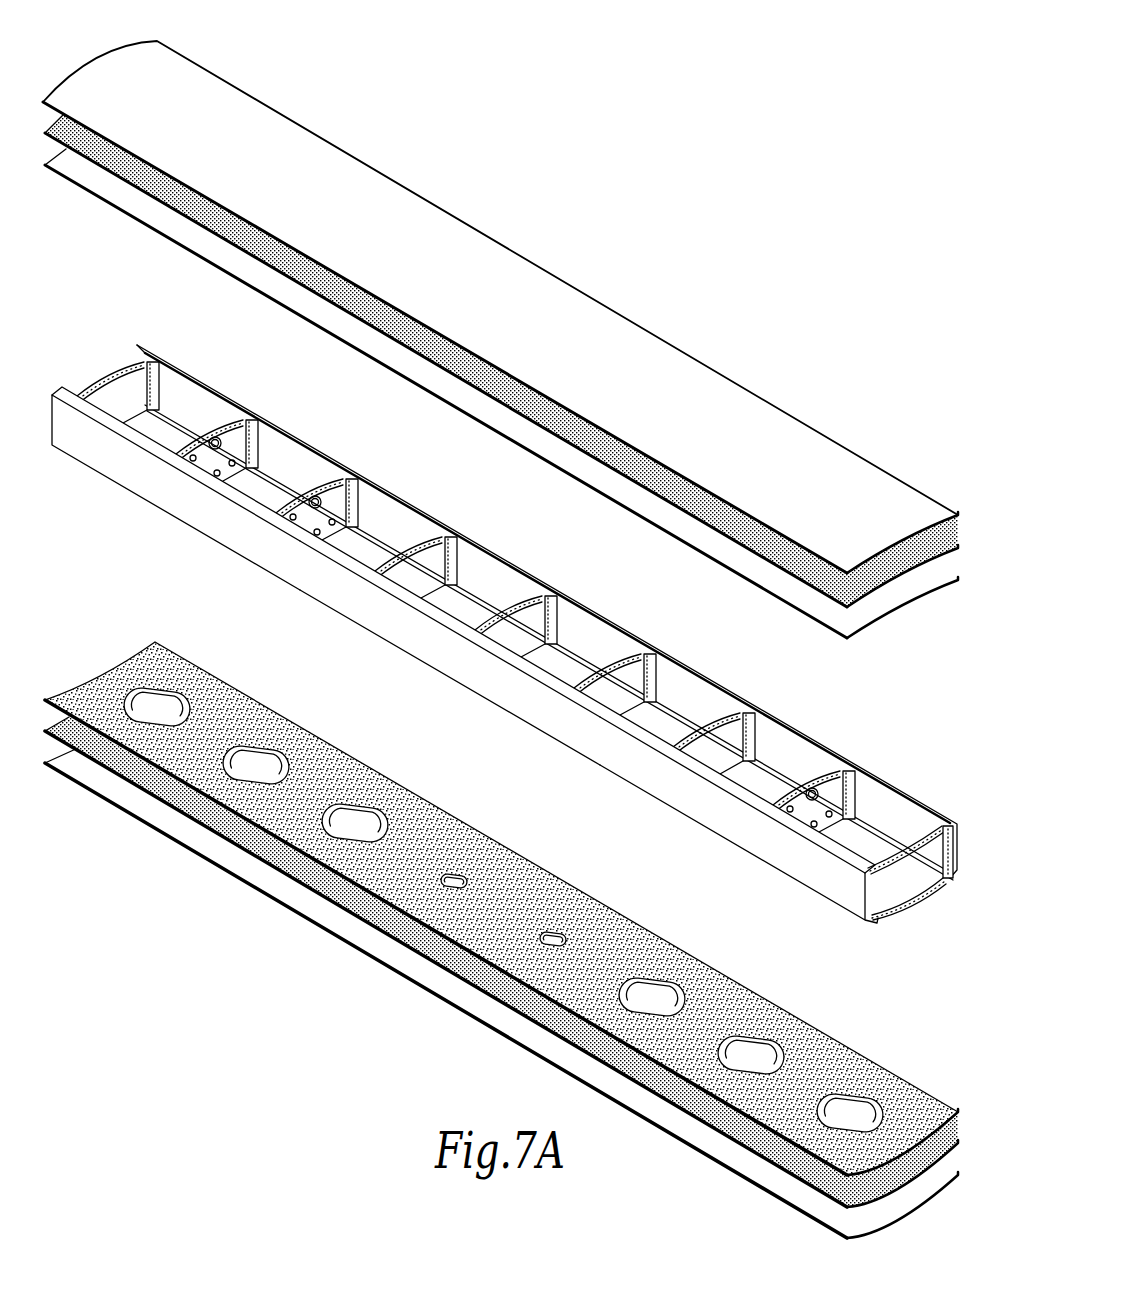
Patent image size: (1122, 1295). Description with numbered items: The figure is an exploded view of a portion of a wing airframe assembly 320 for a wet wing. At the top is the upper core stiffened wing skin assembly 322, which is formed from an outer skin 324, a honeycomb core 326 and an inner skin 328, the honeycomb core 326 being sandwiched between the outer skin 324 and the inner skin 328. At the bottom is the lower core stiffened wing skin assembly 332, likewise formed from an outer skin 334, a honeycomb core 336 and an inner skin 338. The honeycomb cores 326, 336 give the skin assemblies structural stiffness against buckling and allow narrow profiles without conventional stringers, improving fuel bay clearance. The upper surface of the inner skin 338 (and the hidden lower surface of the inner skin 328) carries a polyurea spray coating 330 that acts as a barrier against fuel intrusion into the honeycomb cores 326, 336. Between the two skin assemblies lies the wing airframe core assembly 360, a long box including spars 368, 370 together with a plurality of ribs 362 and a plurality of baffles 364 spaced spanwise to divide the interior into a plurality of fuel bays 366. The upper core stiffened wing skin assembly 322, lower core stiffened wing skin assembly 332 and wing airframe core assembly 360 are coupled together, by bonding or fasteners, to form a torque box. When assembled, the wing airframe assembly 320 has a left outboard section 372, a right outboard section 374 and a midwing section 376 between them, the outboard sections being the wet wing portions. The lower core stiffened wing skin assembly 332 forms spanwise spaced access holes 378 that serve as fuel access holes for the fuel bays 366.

The wing airframe assembly 320 is at (615, 205).
The upper core stiffened wing skin assembly 322 is at (246, 90).
The outer skin 324 is at (320, 155).
The honeycomb core 326 is at (348, 287).
The inner skin 328 is at (382, 342).
The polyurea spray coating 330 is at (515, 897).
The lower core stiffened wing skin assembly 332 is at (155, 836).
The outer skin 334 is at (237, 873).
The honeycomb core 336 is at (287, 868).
The inner skin 338 is at (345, 875).
The wing airframe core assembly 360 is at (812, 731).
The ribs 362 is at (432, 558).
The baffles 364 is at (338, 493).
The fuel bays 366 is at (278, 450).
The spar 368 is at (595, 617).
The spar 370 is at (512, 690).
The left outboard section 372 is at (190, 502).
The right outboard section 374 is at (700, 808).
The midwing section 376 is at (412, 632).
The access holes 378 is at (170, 697).